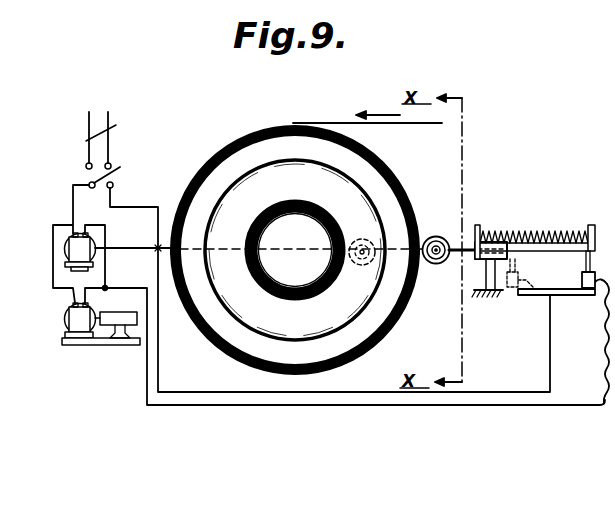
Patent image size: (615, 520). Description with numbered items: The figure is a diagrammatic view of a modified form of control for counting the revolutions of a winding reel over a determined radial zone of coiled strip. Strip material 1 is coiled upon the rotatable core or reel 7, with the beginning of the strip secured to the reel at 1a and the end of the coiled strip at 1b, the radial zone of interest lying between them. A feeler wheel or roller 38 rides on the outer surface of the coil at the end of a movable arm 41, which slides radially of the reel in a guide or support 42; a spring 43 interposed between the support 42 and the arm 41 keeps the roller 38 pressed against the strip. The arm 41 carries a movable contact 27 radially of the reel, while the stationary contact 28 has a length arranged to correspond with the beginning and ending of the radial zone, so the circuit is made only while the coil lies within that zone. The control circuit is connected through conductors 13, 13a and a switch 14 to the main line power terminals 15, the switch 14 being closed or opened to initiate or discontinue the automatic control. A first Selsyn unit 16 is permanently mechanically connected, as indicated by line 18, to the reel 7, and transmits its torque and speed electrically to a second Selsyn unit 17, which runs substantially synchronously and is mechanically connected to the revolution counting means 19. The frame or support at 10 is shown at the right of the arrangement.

The strip material 1 is at (426, 124).
The beginning of the strip 1a is at (303, 212).
The end of the coiled strip 1b is at (303, 121).
The rotatable core or reel 7 is at (299, 274).
The machine frame 10 is at (608, 192).
The conductor 13 is at (73, 214).
The conductor 13a is at (122, 207).
The switch 14 is at (113, 183).
The main line power terminals 15 is at (114, 137).
The Selsyn unit 16 is at (95, 271).
The Selsyn unit 17 is at (64, 318).
The mechanical connection 18 is at (125, 247).
The revolution counting means 19 is at (120, 309).
The movable contact 27 is at (589, 294).
The stationary contact 28 is at (534, 297).
The feeler wheel or roller 38 is at (431, 236).
The movable arm 41 is at (477, 228).
The guide or support 42 is at (476, 294).
The spring 43 is at (528, 228).